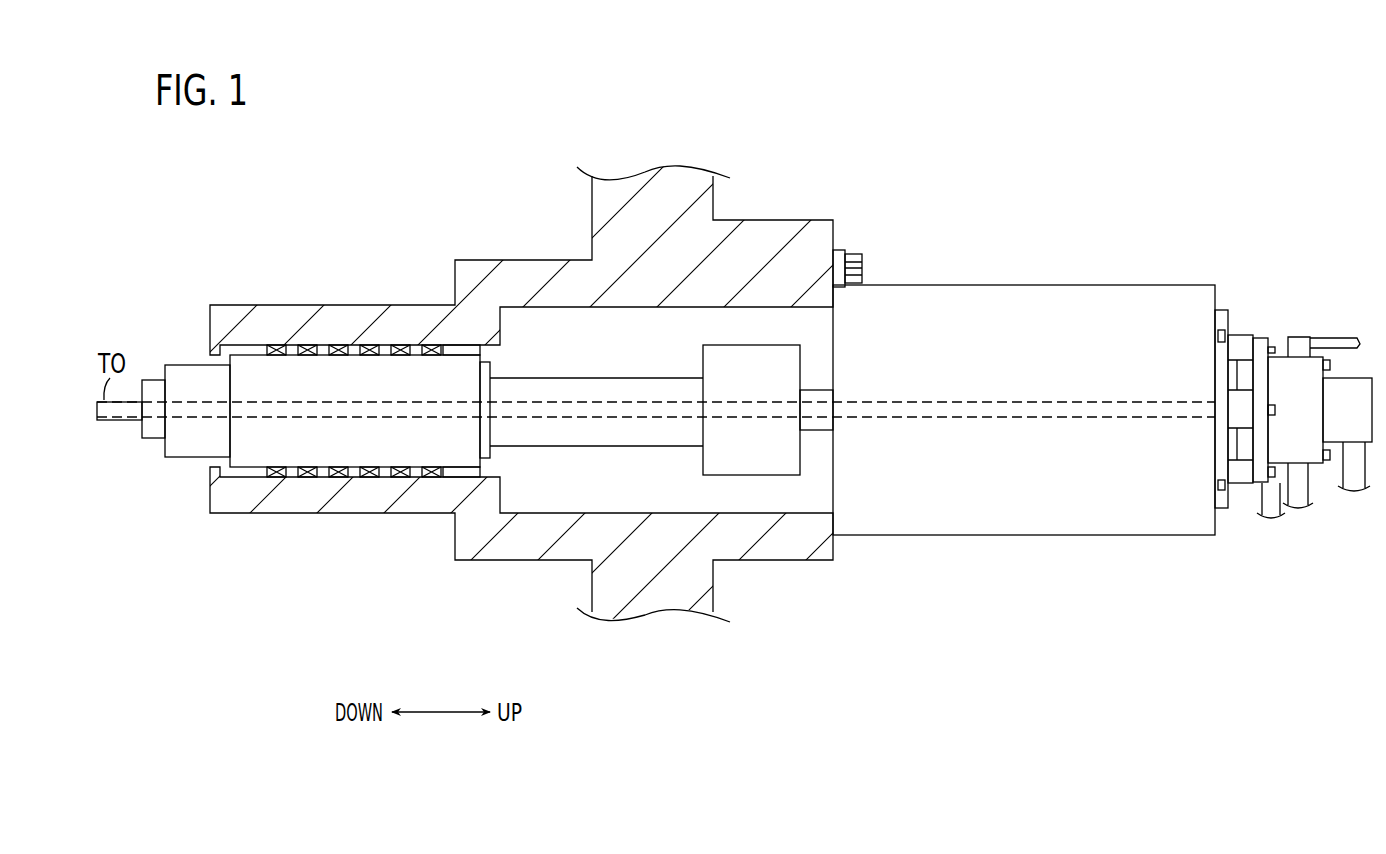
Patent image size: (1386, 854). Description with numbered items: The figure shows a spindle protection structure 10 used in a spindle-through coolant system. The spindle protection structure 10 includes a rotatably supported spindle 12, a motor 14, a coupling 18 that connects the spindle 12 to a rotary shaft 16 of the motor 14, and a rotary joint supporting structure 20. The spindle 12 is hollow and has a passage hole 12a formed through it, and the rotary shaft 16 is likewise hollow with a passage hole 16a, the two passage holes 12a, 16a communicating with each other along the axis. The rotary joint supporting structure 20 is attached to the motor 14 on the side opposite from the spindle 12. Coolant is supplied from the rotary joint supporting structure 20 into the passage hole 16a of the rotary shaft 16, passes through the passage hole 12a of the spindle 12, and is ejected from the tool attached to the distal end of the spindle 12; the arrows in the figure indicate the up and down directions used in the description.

The spindle protection structure 10 is at (808, 119).
The spindle 12 is at (463, 345).
The passage hole 12a is at (311, 398).
The motor 14 is at (1026, 284).
The rotary shaft 16 is at (817, 386).
The passage hole 16a is at (915, 400).
The coupling 18 is at (702, 352).
The rotary joint supporting structure 20 is at (1294, 318).